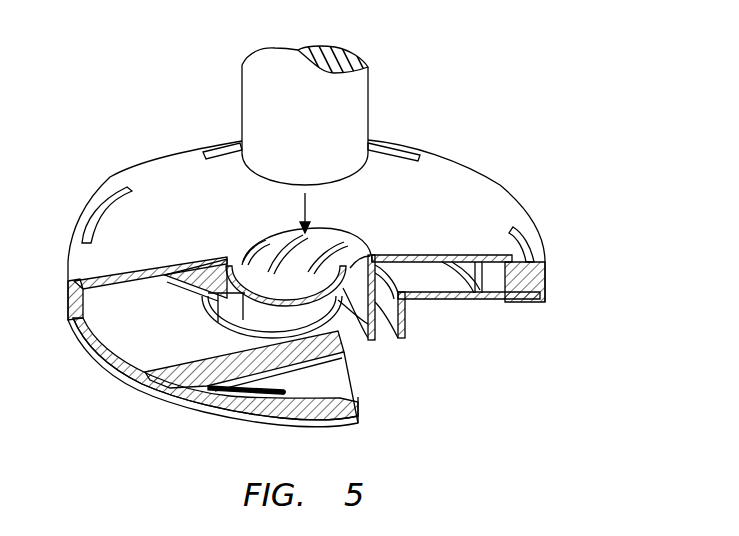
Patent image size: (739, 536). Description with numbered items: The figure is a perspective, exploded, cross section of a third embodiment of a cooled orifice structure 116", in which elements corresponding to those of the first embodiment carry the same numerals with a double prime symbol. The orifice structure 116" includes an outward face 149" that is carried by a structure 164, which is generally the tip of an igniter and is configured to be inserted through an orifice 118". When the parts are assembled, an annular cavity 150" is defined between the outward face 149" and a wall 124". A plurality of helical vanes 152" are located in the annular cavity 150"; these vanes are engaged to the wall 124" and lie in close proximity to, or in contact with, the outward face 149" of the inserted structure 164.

The orifice structure 116 is at (548, 106).
The orifice 118 is at (362, 258).
The wall 124 is at (370, 330).
The outward face 149 is at (358, 121).
The annular cavity 150 is at (353, 313).
The helical vanes 152 is at (290, 236).
The structure 164 is at (378, 72).